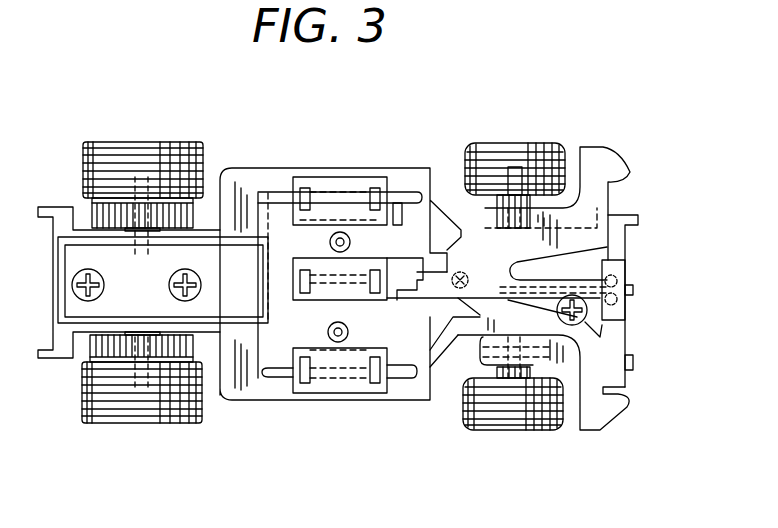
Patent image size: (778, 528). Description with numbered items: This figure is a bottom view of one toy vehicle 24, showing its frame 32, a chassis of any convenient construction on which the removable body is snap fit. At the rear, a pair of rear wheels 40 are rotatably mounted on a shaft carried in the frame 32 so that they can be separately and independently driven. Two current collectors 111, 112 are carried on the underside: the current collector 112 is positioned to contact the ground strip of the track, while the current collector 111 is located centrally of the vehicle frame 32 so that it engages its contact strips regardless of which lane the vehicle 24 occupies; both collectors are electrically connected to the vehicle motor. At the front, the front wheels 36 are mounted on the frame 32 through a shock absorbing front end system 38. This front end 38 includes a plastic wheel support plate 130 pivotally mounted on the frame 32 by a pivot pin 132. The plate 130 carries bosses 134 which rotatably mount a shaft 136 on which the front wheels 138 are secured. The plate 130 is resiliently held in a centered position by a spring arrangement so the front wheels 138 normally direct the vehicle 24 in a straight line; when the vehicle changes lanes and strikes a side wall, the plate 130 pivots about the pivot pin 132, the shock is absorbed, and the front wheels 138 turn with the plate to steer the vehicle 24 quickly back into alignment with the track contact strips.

The toy vehicle 24 is at (338, 147).
The frame 32 is at (420, 397).
The front wheels 36 is at (503, 145).
The shock absorbing front end system 38 is at (593, 438).
The rear wheels 40 is at (170, 112).
The current collector 111 is at (628, 273).
The current collector 112 is at (627, 338).
The wheel support plate 130 is at (603, 197).
The pivot pin 132 is at (465, 273).
The bosses 134 is at (487, 212).
The shaft 136 is at (548, 222).
The front wheels 138 is at (538, 145).